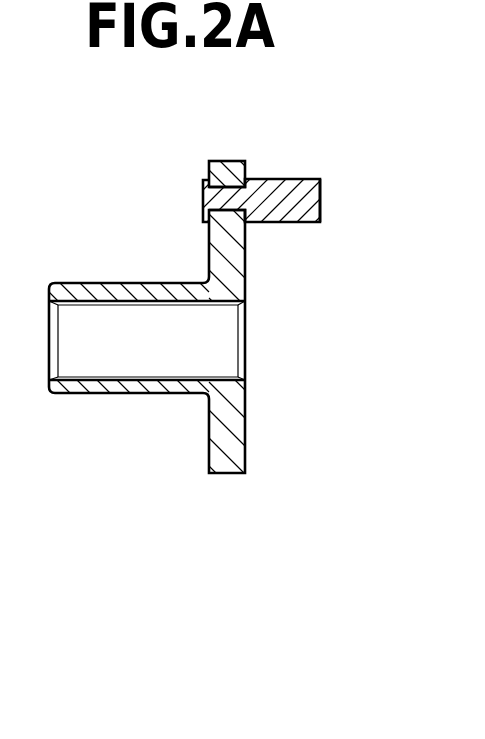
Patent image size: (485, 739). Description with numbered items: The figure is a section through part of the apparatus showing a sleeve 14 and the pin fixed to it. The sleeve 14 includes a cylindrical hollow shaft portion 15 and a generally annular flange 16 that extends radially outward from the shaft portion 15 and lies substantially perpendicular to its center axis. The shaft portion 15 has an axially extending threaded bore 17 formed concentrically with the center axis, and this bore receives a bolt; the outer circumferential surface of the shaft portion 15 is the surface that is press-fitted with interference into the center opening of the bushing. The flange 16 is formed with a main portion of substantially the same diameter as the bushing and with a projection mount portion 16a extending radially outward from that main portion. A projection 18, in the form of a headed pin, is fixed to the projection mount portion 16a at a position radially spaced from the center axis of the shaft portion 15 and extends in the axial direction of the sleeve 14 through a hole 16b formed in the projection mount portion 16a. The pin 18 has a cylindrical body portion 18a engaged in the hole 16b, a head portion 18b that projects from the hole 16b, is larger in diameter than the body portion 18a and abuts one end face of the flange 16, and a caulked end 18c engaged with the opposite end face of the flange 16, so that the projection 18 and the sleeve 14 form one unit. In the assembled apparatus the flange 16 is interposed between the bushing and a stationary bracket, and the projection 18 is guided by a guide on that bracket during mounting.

The sleeve 14 is at (101, 279).
The cylindrical hollow shaft portion 15 is at (102, 394).
The flange 16 is at (236, 447).
The projection mount portion 16a is at (232, 164).
The hole 16b is at (209, 173).
The threaded bore 17 is at (165, 379).
The projection 18 is at (299, 178).
The cylindrical body portion 18a is at (229, 214).
The head portion 18b is at (323, 180).
The caulked end 18c is at (204, 194).